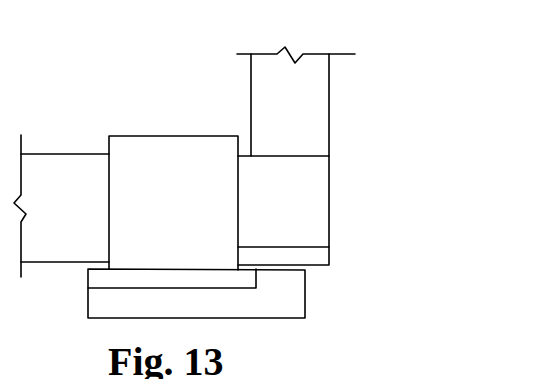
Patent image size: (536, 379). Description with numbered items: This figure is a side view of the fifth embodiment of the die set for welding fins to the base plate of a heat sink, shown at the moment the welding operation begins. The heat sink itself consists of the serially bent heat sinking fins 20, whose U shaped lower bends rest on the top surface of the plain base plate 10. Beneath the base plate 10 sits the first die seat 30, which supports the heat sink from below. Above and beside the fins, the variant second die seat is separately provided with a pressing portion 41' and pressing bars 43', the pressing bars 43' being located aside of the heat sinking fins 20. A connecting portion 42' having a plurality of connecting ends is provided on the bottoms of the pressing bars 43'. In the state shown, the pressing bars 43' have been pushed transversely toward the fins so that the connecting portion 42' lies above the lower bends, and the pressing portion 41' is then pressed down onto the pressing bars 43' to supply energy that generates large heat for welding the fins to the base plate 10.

The base plate 10 is at (98, 276).
The heat sinking fins 20 is at (145, 158).
The first die seat 30 is at (290, 303).
The pressing portion 41' is at (326, 101).
The pressing bars 43' is at (325, 201).
The connecting portion 42' is at (309, 292).